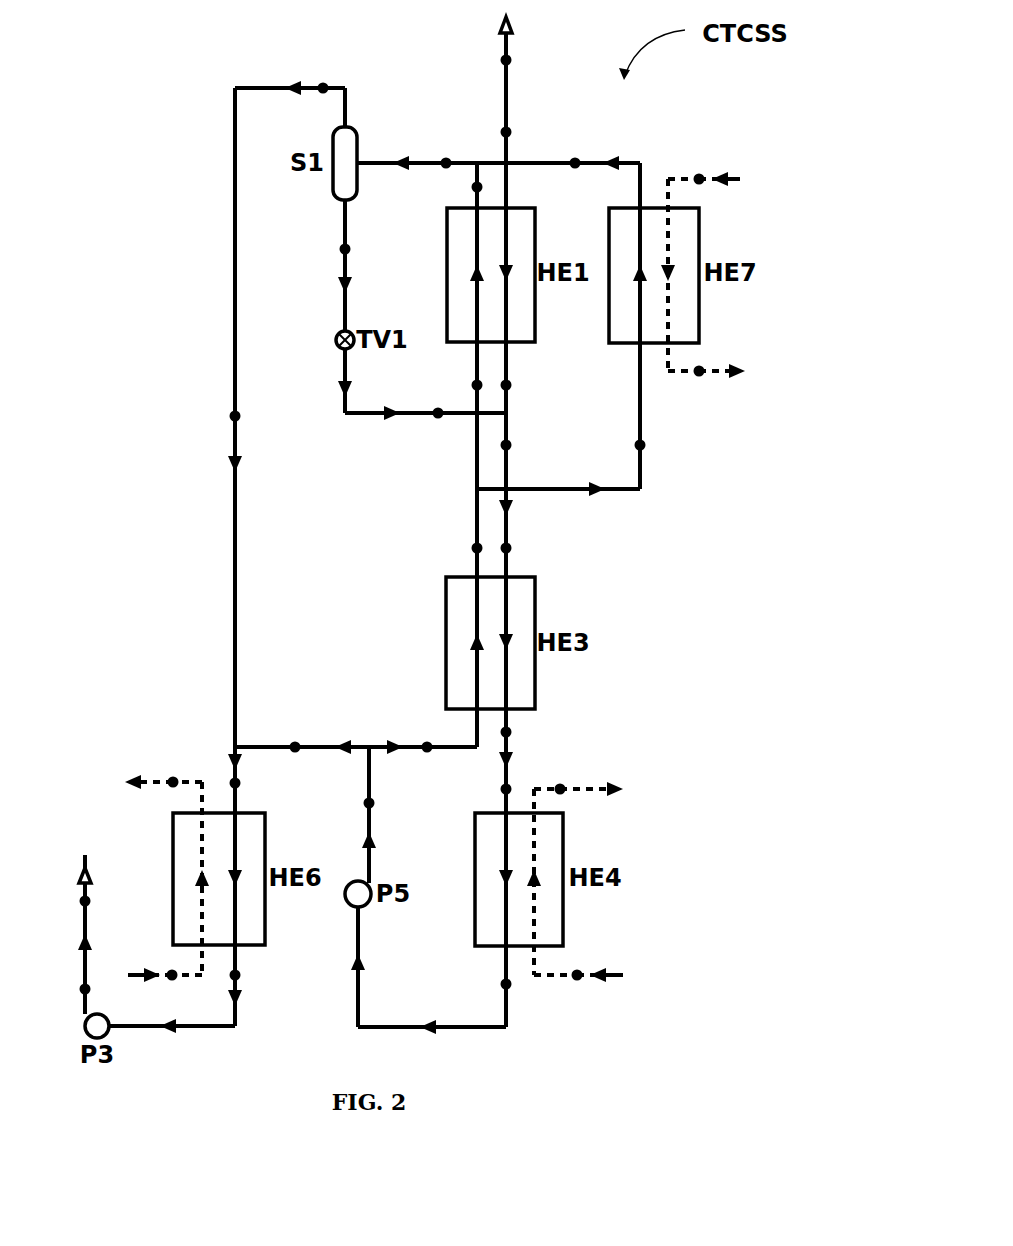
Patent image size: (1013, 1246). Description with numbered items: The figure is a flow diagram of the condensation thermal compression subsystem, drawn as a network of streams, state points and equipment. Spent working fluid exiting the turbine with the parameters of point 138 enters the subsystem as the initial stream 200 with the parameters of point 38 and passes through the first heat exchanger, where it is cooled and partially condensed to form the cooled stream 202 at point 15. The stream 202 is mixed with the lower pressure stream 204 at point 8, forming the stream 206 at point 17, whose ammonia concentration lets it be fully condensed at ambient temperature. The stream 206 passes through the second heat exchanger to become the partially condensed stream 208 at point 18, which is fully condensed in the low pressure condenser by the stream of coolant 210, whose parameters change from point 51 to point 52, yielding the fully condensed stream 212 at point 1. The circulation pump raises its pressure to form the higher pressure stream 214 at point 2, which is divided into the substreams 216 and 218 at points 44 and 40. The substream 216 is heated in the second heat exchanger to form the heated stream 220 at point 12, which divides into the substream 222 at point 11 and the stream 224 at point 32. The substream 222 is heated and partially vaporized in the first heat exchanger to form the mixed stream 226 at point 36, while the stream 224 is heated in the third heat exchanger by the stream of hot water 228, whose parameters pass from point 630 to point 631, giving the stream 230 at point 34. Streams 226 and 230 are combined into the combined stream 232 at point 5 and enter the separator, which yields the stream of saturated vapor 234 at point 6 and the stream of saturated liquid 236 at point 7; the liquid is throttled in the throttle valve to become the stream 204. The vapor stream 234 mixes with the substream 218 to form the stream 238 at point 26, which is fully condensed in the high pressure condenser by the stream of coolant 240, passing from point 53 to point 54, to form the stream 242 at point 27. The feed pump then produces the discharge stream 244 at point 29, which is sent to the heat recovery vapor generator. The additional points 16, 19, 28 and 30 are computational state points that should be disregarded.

The point 1 is at (493, 984).
The point 2 is at (381, 803).
The point 5 is at (445, 150).
The point 6 is at (322, 76).
The point 7 is at (332, 249).
The point 8 is at (437, 427).
The point 11 is at (461, 385).
The point 12 is at (460, 548).
The point 15 is at (523, 385).
The point 16 is at (523, 445).
The point 17 is at (523, 548).
The point 18 is at (524, 732).
The point 19 is at (490, 789).
The point 26 is at (253, 783).
The point 27 is at (252, 975).
The point 28 is at (69, 989).
The point 29 is at (69, 901).
The point 30 is at (252, 416).
The point 32 is at (624, 445).
The point 34 is at (575, 177).
The point 36 is at (460, 187).
The point 38 is at (523, 132).
The point 40 is at (295, 731).
The point 44 is at (427, 731).
The point 51 is at (577, 989).
The point 52 is at (560, 775).
The point 53 is at (173, 990).
The point 54 is at (173, 769).
The point 138 is at (528, 60).
The initial CTCSS stream 200 is at (503, 97).
The cooled stream 202 is at (508, 365).
The lower pressure stream 204 is at (360, 417).
The stream 206 is at (508, 473).
The partially condensed stream 208 is at (508, 747).
The stream of coolant 210 is at (590, 970).
The fully condensed stream 212 is at (475, 1030).
The higher pressure stream 214 is at (372, 870).
The substream 216 is at (413, 745).
The substream 218 is at (263, 745).
The heated stream 220 is at (475, 520).
The substream 222 is at (473, 357).
The stream 224 is at (643, 418).
The mixed stream 226 is at (468, 197).
The stream of hot water 228 is at (712, 178).
The stream 230 is at (550, 160).
The combined stream 232 is at (432, 160).
The stream of saturated vapor 234 is at (232, 235).
The stream of saturated liquid 236 is at (340, 305).
The stream 238 is at (240, 790).
The stream of coolant 240 is at (165, 970).
The stream 242 is at (130, 1032).
The CTCSS discharge stream 244 is at (82, 962).
The point 630 is at (700, 165).
The point 631 is at (706, 385).